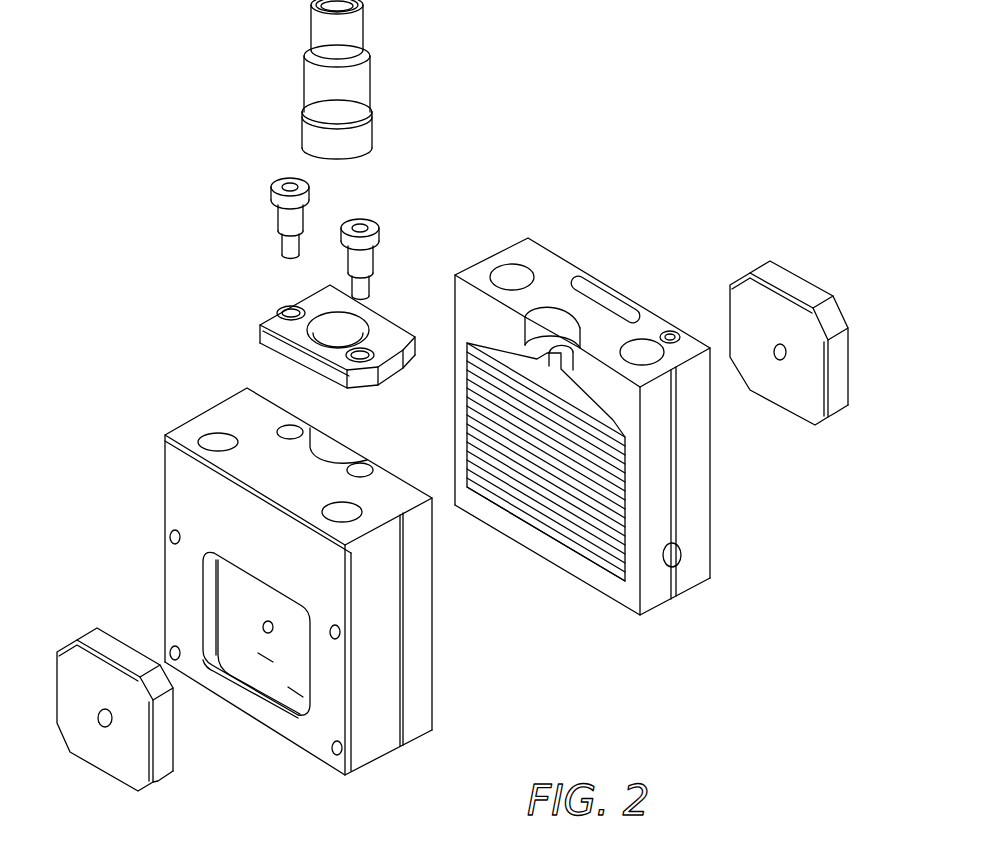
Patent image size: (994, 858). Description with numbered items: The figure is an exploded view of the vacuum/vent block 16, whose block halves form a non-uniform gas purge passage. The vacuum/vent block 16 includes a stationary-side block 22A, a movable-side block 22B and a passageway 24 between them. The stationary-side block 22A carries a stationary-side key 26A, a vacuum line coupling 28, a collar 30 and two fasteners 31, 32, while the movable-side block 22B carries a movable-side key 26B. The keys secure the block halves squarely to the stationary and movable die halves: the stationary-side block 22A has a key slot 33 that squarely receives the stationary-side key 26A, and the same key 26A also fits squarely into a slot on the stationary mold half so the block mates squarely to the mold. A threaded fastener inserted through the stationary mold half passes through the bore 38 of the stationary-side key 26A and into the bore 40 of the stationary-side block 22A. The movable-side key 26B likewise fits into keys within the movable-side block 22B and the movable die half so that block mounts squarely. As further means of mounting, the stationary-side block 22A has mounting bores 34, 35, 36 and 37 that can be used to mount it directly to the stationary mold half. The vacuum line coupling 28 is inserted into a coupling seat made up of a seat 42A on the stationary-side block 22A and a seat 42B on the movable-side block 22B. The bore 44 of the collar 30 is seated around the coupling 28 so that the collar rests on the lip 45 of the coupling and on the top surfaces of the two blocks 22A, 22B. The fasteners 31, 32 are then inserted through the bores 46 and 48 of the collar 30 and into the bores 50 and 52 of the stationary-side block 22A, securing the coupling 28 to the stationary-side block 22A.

The vacuum/vent block 16 is at (614, 155).
The stationary-side block 22A is at (285, 591).
The movable-side block 22B is at (582, 404).
The passageway 24 is at (592, 637).
The stationary-side key 26A is at (101, 696).
The movable-side key 26B is at (778, 275).
The vacuum line coupling 28 is at (347, 84).
The collar 30 is at (315, 325).
The fastener 31 is at (361, 222).
The fastener 32 is at (287, 183).
The key slot 33 is at (293, 677).
The mounting bore 34 is at (340, 632).
The mounting bore 35 is at (337, 755).
The mounting bore 36 is at (176, 652).
The mounting bore 37 is at (170, 535).
The bore 38 is at (103, 722).
The bore 40 is at (263, 630).
The seat 42A is at (312, 446).
The seat 42B is at (557, 318).
The bore 44 is at (328, 325).
The lip 45 is at (373, 118).
The bore 46 is at (352, 360).
The bore 48 is at (283, 316).
The bore 50 is at (362, 470).
The bore 52 is at (288, 430).